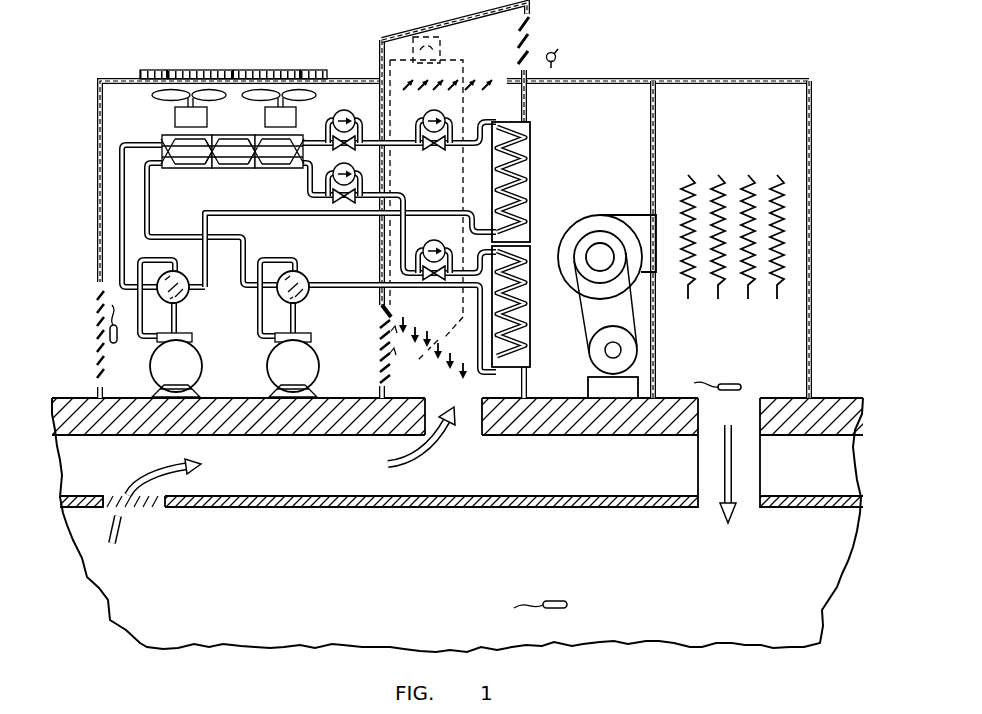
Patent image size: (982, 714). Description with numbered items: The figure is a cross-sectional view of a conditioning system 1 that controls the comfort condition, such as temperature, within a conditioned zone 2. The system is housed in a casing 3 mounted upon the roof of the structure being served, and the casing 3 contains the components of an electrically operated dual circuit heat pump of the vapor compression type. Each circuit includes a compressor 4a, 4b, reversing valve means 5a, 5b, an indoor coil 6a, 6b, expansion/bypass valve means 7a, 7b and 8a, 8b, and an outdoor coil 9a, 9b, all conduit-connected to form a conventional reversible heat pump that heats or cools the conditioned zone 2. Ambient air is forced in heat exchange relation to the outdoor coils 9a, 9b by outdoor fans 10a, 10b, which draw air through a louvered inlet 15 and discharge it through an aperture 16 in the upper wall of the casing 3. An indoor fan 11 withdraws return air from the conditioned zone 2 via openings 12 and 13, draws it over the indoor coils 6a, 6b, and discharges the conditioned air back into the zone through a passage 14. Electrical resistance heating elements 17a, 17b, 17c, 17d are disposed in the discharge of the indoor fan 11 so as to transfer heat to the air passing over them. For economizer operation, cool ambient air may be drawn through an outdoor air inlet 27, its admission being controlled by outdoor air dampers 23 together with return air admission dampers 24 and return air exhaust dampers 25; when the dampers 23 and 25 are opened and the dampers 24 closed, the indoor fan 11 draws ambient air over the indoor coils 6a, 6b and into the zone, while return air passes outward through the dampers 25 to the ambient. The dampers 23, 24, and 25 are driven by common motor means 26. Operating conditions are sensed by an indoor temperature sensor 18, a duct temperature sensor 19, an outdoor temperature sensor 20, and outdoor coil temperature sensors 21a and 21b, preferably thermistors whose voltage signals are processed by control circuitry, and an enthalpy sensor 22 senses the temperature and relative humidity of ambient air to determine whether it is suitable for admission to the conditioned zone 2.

The conditioning system 1 is at (624, 78).
The conditioned zone 2 is at (419, 589).
The casing 3 is at (812, 96).
The compressor 4a is at (202, 367).
The compressor 4b is at (319, 367).
The reversing valve means 5a is at (186, 300).
The reversing valve means 5b is at (307, 278).
The indoor coil 6a is at (531, 167).
The indoor coil 6b is at (531, 346).
The expansion/bypass valve means 7a is at (428, 111).
The expansion/bypass valve means 7b is at (428, 242).
The expansion/bypass valve means 8a is at (341, 110).
The expansion/bypass valve means 8b is at (347, 165).
The outdoor coil 9a is at (192, 167).
The outdoor coil 9b is at (233, 168).
The outdoor fan 10a is at (176, 118).
The outdoor fan 10b is at (266, 118).
The indoor fan 11 is at (589, 219).
The opening 12 is at (150, 511).
The opening 13 is at (469, 438).
The passage 14 is at (711, 503).
The louvered inlet 15 is at (97, 327).
The aperture 16 is at (146, 70).
The heating element 17a is at (688, 178).
The heating element 17b is at (718, 178).
The heating element 17c is at (748, 178).
The heating element 17d is at (777, 178).
The indoor temperature sensor 18 is at (567, 604).
The duct temperature sensor 19 is at (736, 384).
The outdoor temperature sensor 20 is at (115, 344).
The outdoor coil temperature sensor 21a is at (282, 168).
The outdoor coil temperature sensor 21b is at (331, 244).
The enthalpy sensor 22 is at (555, 53).
The outdoor air dampers 23 is at (467, 78).
The return air admission dampers 24 is at (433, 352).
The return air exhaust dampers 25 is at (385, 346).
The motor means 26 is at (433, 35).
The outdoor air inlet 27 is at (527, 27).